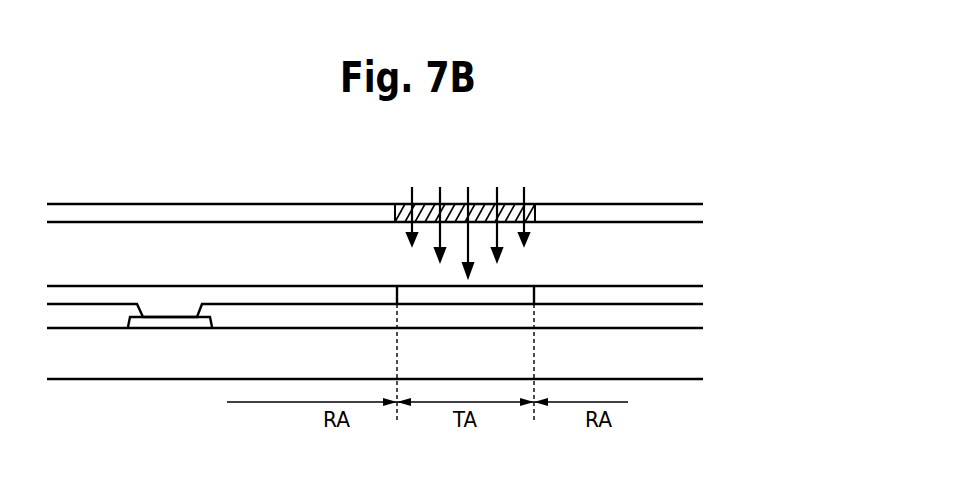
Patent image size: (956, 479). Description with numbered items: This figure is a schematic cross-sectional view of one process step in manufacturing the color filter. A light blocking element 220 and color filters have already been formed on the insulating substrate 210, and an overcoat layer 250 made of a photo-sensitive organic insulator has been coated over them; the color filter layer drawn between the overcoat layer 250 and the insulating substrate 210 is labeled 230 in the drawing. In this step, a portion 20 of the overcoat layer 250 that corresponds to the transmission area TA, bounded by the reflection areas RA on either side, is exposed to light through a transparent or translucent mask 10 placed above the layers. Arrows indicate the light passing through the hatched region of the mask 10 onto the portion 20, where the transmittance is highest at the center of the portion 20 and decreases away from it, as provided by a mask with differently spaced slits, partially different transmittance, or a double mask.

The mask 10 is at (700, 214).
The portion of the overcoat layer 20 is at (453, 203).
The insulating substrate 210 is at (700, 360).
The light blocking element 220 is at (174, 323).
The insulating layer 230 is at (700, 322).
The overcoat layer 250 is at (700, 296).